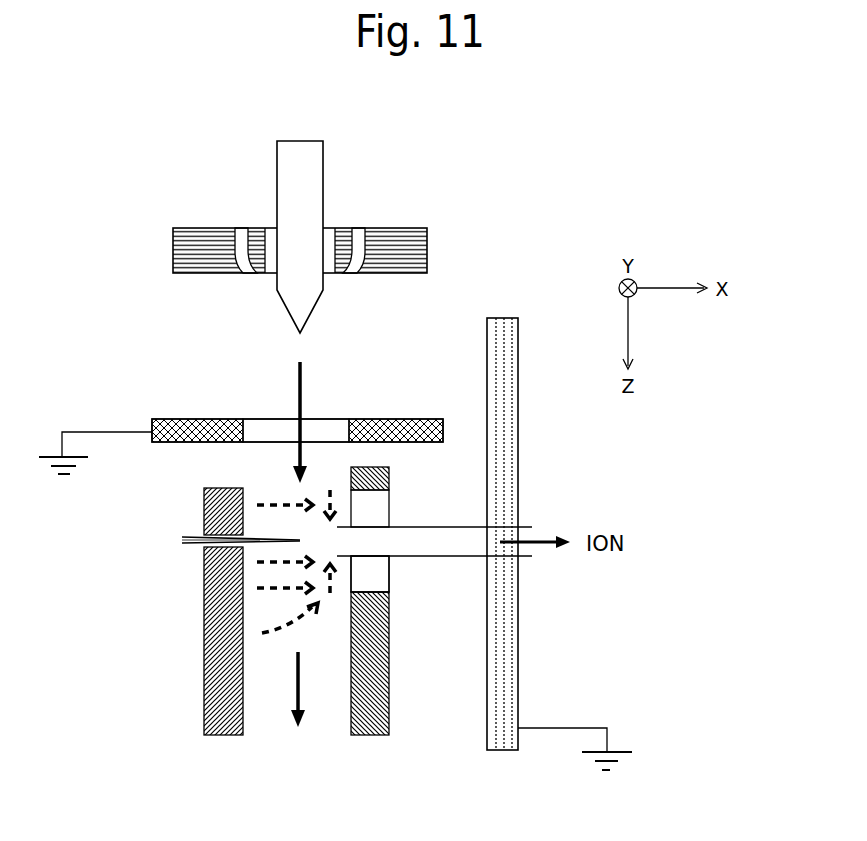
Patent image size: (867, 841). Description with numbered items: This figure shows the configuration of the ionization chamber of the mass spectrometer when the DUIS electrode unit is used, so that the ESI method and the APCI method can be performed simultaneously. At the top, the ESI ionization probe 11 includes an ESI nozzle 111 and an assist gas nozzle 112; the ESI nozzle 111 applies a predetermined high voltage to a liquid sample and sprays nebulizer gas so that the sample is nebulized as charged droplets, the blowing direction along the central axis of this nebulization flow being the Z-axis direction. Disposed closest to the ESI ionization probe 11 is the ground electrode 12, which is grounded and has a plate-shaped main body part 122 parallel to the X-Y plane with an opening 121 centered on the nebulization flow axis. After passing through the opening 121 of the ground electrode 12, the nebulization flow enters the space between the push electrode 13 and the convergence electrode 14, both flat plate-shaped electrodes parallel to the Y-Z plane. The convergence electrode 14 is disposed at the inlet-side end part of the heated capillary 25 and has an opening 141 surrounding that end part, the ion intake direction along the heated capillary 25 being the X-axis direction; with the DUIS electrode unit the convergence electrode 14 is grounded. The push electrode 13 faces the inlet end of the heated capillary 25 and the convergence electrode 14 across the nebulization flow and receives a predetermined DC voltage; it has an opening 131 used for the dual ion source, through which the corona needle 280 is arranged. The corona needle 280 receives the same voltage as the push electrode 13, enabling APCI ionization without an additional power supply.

The ESI ionization probe 11 is at (318, 213).
The ESI nozzle 111 is at (337, 233).
The assist gas nozzle 112 is at (360, 227).
The ground electrode 12 is at (297, 382).
The opening 121 is at (310, 406).
The plate-shaped main body part 122 is at (382, 419).
The push electrode 13 is at (202, 653).
The opening 131 is at (201, 550).
The corona needle 280 is at (196, 535).
The convergence electrode 14 is at (388, 700).
The opening 141 is at (380, 570).
The heated capillary 25 is at (413, 527).